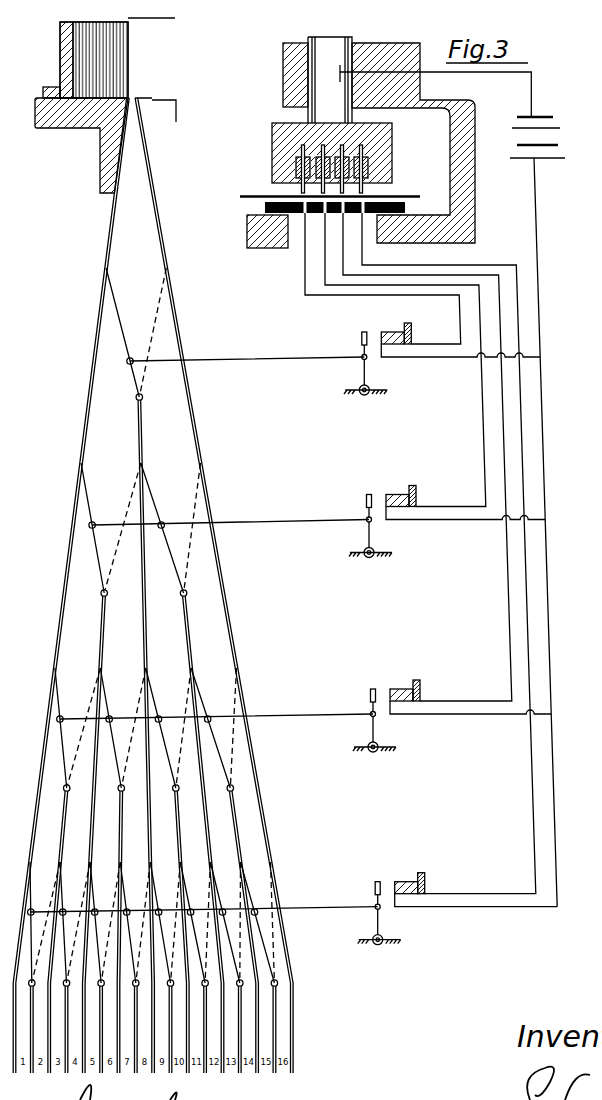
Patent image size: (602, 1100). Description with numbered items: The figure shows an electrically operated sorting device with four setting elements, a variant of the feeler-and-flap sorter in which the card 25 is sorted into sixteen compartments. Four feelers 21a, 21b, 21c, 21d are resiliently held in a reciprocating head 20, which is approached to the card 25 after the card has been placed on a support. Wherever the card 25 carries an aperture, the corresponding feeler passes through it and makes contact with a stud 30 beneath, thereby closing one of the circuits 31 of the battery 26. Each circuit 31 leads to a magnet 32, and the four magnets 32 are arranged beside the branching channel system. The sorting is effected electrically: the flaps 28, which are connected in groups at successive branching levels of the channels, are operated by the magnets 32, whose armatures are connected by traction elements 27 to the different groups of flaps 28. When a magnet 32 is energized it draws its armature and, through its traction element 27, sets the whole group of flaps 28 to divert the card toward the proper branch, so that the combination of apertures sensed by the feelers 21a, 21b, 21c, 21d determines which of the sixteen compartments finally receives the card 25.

The reciprocating head 20 is at (392, 161).
The feeler 21a is at (362, 150).
The feeler 21b is at (342, 152).
The feeler 21c is at (323, 154).
The feeler 21d is at (304, 156).
The card 25 is at (266, 196).
The battery 26 is at (551, 117).
The traction element 27 is at (288, 360).
The flap 28 is at (116, 305).
The contact stud 30 is at (305, 216).
The circuit 31 is at (480, 266).
The magnet 32 is at (398, 343).